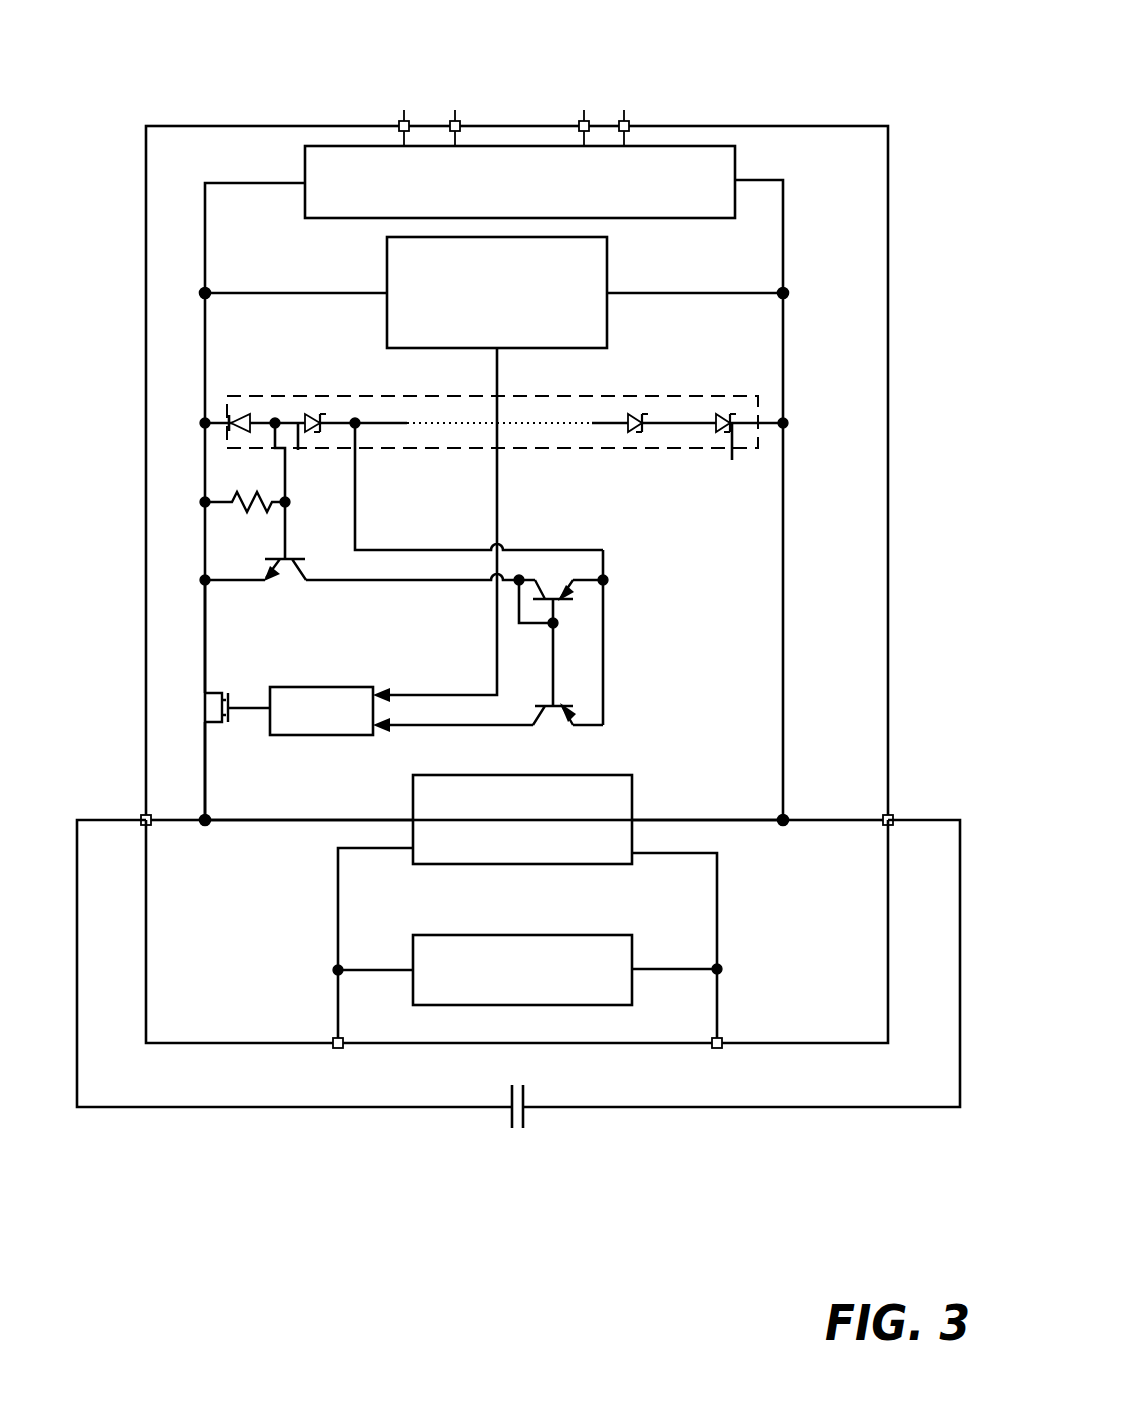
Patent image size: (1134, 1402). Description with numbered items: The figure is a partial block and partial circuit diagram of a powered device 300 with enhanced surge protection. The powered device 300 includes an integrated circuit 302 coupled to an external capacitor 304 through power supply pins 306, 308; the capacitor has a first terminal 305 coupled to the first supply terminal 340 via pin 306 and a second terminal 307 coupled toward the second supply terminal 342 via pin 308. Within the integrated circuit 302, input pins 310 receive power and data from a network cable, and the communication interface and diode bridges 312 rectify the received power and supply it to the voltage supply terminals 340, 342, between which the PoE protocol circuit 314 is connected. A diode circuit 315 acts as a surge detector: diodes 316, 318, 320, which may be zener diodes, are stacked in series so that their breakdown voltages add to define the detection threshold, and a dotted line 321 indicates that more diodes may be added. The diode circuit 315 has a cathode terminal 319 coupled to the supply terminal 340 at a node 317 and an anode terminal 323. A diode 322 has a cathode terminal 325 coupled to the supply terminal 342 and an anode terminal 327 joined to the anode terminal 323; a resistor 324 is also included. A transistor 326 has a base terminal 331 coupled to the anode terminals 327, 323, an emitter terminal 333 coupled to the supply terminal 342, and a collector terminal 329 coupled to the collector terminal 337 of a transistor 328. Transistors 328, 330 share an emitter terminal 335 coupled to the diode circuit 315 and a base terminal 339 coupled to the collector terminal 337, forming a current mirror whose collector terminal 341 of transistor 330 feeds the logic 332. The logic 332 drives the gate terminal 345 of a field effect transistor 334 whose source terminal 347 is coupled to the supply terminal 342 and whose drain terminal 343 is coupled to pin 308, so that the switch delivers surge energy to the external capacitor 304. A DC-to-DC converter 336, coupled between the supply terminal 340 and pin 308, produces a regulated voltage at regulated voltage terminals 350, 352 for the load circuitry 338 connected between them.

The powered device 300 is at (748, 52).
The integrated circuit 302 is at (888, 428).
The external capacitor 304 is at (526, 1120).
The first terminal 305 is at (720, 1107).
The power supply pin 306 is at (890, 816).
The second terminal 307 is at (105, 1107).
The power supply pin 308 is at (145, 816).
The input pins 310 is at (624, 120).
The communication interface and diode bridges 312 is at (375, 146).
The PoE protocol circuit 314 is at (607, 266).
The diode circuit 315 is at (758, 396).
The diode 316 is at (738, 432).
The node 317 is at (788, 423).
The diode 318 is at (632, 418).
The cathode terminal 319 is at (745, 435).
The diode 320 is at (312, 420).
The dotted line 321 is at (446, 444).
The diode 322 is at (240, 414).
The anode terminal 323 is at (298, 436).
The resistor 324 is at (232, 500).
The cathode terminal 325 is at (205, 420).
The transistor 326 is at (308, 560).
The anode terminal 327 is at (272, 436).
The transistor 328 is at (556, 560).
The first (collector) terminal 329 is at (311, 582).
The transistor 330 is at (560, 735).
The control (base) terminal 331 is at (285, 545).
The logic 332 is at (357, 737).
The second (emitter) terminal 333 is at (235, 583).
The field effect transistor 334 is at (200, 705).
The second (emitter) terminal 335 is at (603, 562).
The DC-to-DC converter 336 is at (497, 375).
The first (collector) terminal 337 is at (477, 583).
The load circuitry 338 is at (632, 988).
The control (base) terminal 339 is at (555, 665).
The voltage supply terminal 340 is at (783, 373).
The first (collector) terminal 341 is at (497, 728).
The voltage supply terminal 342 is at (205, 258).
The second (drain) terminal 343 is at (205, 795).
The control (gate) terminal 345 is at (245, 710).
The first (source) terminal 347 is at (214, 690).
The regulated voltage terminal 350 is at (718, 940).
The regulated voltage terminal 352 is at (338, 930).